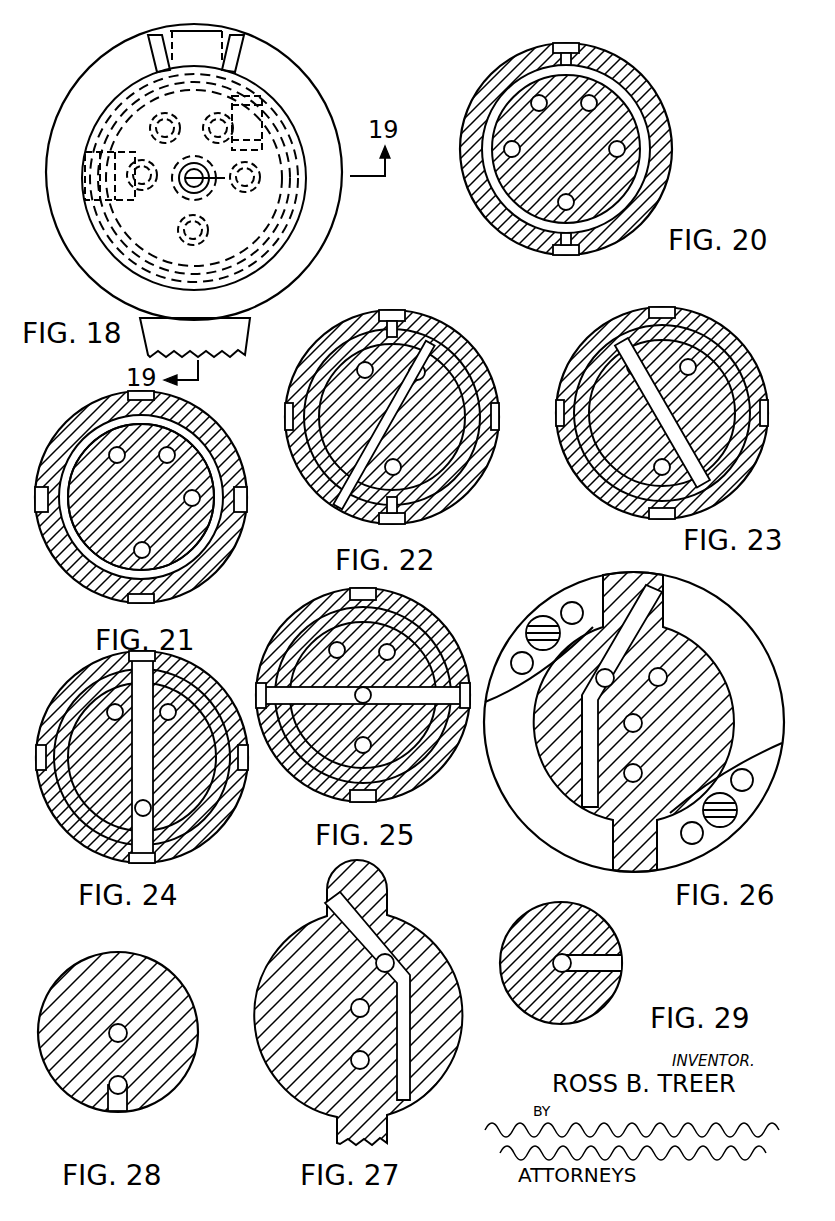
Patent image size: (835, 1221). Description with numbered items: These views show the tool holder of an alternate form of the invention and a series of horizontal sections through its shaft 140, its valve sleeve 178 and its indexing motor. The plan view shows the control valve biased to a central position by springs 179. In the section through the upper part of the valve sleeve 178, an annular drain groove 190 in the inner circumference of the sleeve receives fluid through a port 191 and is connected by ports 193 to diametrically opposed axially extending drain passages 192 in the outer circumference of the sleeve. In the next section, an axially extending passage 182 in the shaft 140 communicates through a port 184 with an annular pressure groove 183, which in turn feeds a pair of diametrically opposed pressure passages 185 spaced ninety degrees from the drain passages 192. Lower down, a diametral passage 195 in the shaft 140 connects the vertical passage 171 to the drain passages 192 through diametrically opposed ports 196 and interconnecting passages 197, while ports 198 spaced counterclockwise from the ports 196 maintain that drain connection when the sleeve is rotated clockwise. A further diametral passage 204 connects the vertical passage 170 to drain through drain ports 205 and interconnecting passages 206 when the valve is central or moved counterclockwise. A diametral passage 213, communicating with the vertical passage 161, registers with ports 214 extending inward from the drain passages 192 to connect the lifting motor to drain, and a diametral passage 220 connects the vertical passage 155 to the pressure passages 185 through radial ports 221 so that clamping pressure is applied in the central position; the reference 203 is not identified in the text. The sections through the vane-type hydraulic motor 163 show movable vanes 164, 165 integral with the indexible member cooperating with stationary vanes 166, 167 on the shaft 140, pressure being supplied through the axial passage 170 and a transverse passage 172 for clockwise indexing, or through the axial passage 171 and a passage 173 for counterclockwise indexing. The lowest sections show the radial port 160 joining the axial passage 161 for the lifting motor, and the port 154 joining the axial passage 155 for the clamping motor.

In FIG. 18, the springs 179 is at (150, 50).
In FIG. 20, the annular drain groove 190 is at (575, 149).
In FIG. 20, the drain passages 192 is at (590, 155).
In FIG. 21, the drain passages 192 is at (101, 496).
In FIG. 22, the drain passages 192 is at (392, 411).
In FIG. 23, the drain passages 192 is at (659, 405).
In FIG. 24, the drain passages 192 is at (142, 759).
In FIG. 25, the drain passages 192 is at (393, 685).
In FIG. 20, the ports 193 is at (531, 150).
In FIG. 21, the shaft 140 is at (129, 497).
In FIG. 26, the shaft 140 is at (720, 692).
In FIG. 21, the annular groove 183 is at (158, 484).
In FIG. 21, the port 184 is at (200, 496).
In FIG. 21, the pressure passages 185 is at (158, 516).
In FIG. 25, the pressure passages 185 is at (380, 702).
In FIG. 21, the axially extending passage 182 is at (182, 497).
In FIG. 22, the diametral passage 195 is at (380, 417).
In FIG. 22, the valve sleeve 178 is at (410, 417).
In FIG. 24, the valve sleeve 178 is at (128, 757).
In FIG. 22, the ports 198 is at (403, 408).
In FIG. 22, the port 191 is at (420, 400).
In FIG. 22, the ports 196 is at (393, 400).
In FIG. 22, the interconnecting passages 197 is at (397, 406).
In FIG. 23, the outer circle 203 is at (673, 413).
In FIG. 23, the interconnecting passages 206 is at (662, 390).
In FIG. 23, the vane-type hydraulic motor 163 is at (618, 400).
In FIG. 23, the diametral passage 204 is at (611, 413).
In FIG. 23, the drain ports 205 is at (676, 395).
In FIG. 24, the diametral passage 213 is at (156, 753).
In FIG. 24, the ports 214 is at (187, 759).
In FIG. 24, the axially extending passage 161 is at (208, 812).
In FIG. 28, the axially extending passage 161 is at (127, 1085).
In FIG. 25, the ports 221 is at (360, 691).
In FIG. 25, the diametral passage 220 is at (363, 748).
In FIG. 26, the stationary vane 167 is at (656, 600).
In FIG. 27, the stationary vane 167 is at (380, 890).
In FIG. 26, the movable vane 165 is at (585, 594).
In FIG. 26, the stationary vane 166 is at (610, 836).
In FIG. 26, the axially extending passage 171 is at (660, 678).
In FIG. 27, the axially extending passage 171 is at (392, 962).
In FIG. 26, the passage 172 is at (583, 808).
In FIG. 26, the axially extending passage 170 is at (545, 785).
In FIG. 26, the movable vane 164 is at (735, 802).
In FIG. 27, the passage 173 is at (405, 1102).
In FIG. 28, the radial port 160 is at (110, 1108).
In FIG. 28, the axially extending passage 155 is at (128, 1022).
In FIG. 29, the axially extending passage 155 is at (575, 950).
In FIG. 29, the port 154 is at (622, 962).